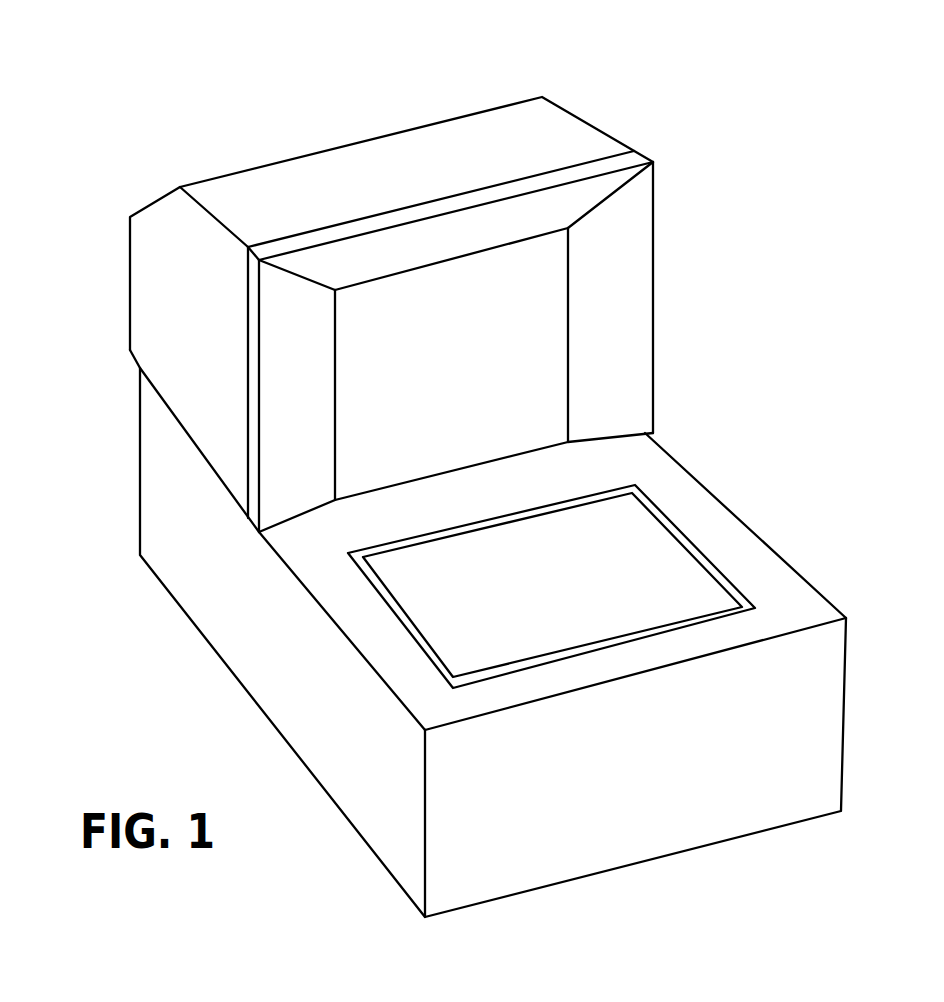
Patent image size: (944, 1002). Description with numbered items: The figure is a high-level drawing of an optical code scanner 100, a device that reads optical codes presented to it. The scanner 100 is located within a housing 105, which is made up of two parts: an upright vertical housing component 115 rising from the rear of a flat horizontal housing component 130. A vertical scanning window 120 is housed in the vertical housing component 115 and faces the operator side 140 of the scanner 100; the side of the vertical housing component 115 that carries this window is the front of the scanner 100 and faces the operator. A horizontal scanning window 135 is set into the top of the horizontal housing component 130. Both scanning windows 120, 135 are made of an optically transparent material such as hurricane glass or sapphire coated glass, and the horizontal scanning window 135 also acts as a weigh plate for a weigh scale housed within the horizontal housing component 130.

The optical code scanner 100 is at (152, 47).
The housing 105 is at (162, 500).
The vertical housing component 115 is at (560, 132).
The vertical scanning window 120 is at (512, 312).
The horizontal housing component 130 is at (685, 497).
The horizontal scanning window 135 is at (653, 578).
The operator side 140 is at (655, 723).